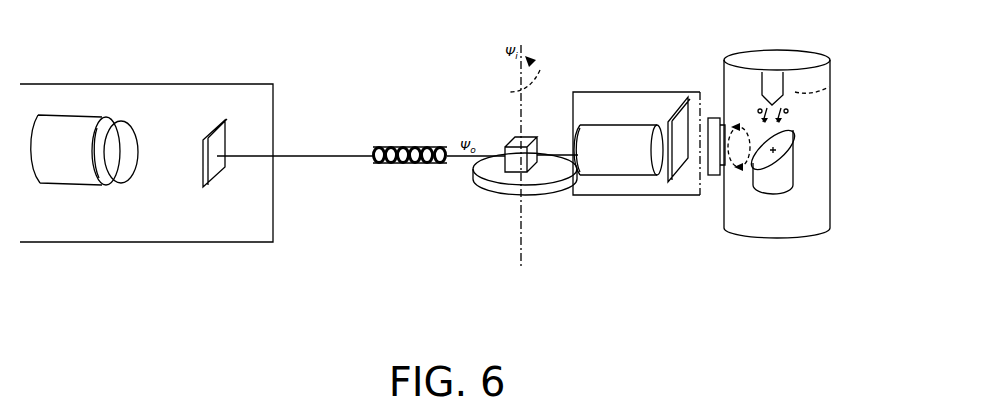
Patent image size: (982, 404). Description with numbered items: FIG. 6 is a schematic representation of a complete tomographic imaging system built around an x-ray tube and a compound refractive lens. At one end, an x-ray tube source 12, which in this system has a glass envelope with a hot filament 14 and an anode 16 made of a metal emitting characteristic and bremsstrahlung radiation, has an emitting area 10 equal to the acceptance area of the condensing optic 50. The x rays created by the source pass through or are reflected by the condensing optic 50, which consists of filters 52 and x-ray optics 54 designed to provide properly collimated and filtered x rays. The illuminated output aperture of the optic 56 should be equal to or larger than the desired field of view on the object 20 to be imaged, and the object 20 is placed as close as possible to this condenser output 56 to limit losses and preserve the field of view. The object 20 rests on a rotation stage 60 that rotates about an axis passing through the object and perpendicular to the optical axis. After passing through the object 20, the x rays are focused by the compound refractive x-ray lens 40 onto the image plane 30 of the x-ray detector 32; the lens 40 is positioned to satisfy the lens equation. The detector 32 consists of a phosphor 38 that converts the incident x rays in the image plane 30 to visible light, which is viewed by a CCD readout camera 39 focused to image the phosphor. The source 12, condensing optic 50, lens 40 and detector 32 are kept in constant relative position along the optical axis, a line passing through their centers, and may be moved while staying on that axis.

The emitting area 10 is at (742, 165).
The x-ray tube source 12 is at (783, 45).
The hot filament 14 is at (838, 78).
The anode 16 is at (798, 163).
The object 20 is at (474, 176).
The image plane 30 is at (220, 150).
The x-ray detector 32 is at (150, 243).
The phosphor 38 is at (225, 113).
The CCD readout camera 39 is at (96, 196).
The compound refractive x-ray lens 40 is at (407, 140).
The condensing optic 50 is at (656, 90).
The filters 52 is at (708, 184).
The x-ray optics 54 is at (643, 178).
The output aperture of the optic 56 is at (568, 150).
The rotation stage 60 is at (533, 196).